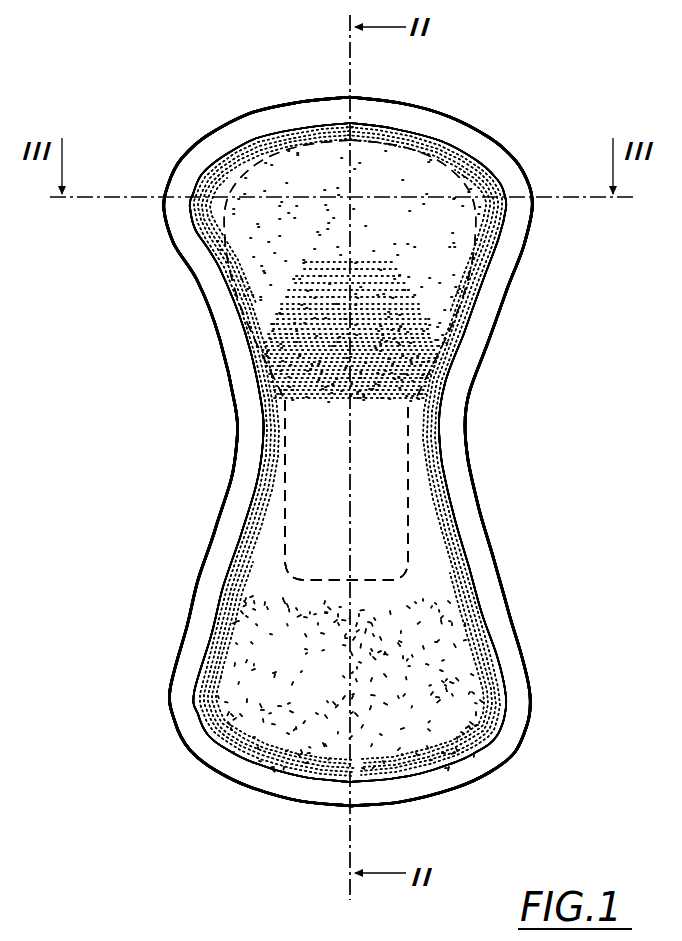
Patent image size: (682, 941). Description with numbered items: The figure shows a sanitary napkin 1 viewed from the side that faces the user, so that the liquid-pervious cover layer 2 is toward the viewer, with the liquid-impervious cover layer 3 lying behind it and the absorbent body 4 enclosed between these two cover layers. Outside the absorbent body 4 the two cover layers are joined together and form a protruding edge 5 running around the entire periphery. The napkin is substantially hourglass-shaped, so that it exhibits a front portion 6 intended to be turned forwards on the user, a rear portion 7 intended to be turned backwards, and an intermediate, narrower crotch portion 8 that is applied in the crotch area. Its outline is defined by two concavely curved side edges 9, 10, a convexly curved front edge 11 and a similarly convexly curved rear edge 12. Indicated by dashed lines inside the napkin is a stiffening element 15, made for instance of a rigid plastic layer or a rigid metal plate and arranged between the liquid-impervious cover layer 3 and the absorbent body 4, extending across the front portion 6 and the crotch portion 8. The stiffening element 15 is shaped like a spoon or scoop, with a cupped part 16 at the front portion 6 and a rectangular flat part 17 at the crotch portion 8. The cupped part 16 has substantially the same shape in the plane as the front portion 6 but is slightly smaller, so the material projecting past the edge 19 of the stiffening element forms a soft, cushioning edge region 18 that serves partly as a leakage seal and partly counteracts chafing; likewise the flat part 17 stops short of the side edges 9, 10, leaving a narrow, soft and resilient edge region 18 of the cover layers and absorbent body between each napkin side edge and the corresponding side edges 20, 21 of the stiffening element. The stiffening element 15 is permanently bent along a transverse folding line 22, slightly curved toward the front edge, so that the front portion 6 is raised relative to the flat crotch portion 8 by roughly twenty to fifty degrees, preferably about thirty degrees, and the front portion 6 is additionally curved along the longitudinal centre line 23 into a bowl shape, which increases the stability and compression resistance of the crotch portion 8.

The sanitary napkin 1 is at (551, 70).
The liquid-pervious cover layer 2 is at (432, 296).
The liquid-impervious cover layer 3 is at (509, 248).
The absorbent body 4 is at (504, 645).
The protruding edge 5 is at (494, 748).
The front portion 6 is at (285, 240).
The rear portion 7 is at (242, 709).
The crotch portion 8 is at (263, 405).
The concavely curved side edge 9 is at (189, 594).
The concavely curved side edge 10 is at (519, 598).
The convexly curved front edge 11 is at (434, 102).
The convexly curved rear edge 12 is at (294, 808).
The stiffening element 15 is at (380, 566).
The cupped part 16 is at (233, 277).
The rectangular flat part 17 is at (453, 424).
The soft edge region 18 is at (223, 173).
The edge of the stiffening element 19 is at (457, 171).
The side edge of the stiffening element 20 is at (281, 498).
The side edge of the stiffening element 21 is at (414, 498).
The transverse folding line 22 is at (238, 310).
The longitudinal centre line 23 is at (349, 80).